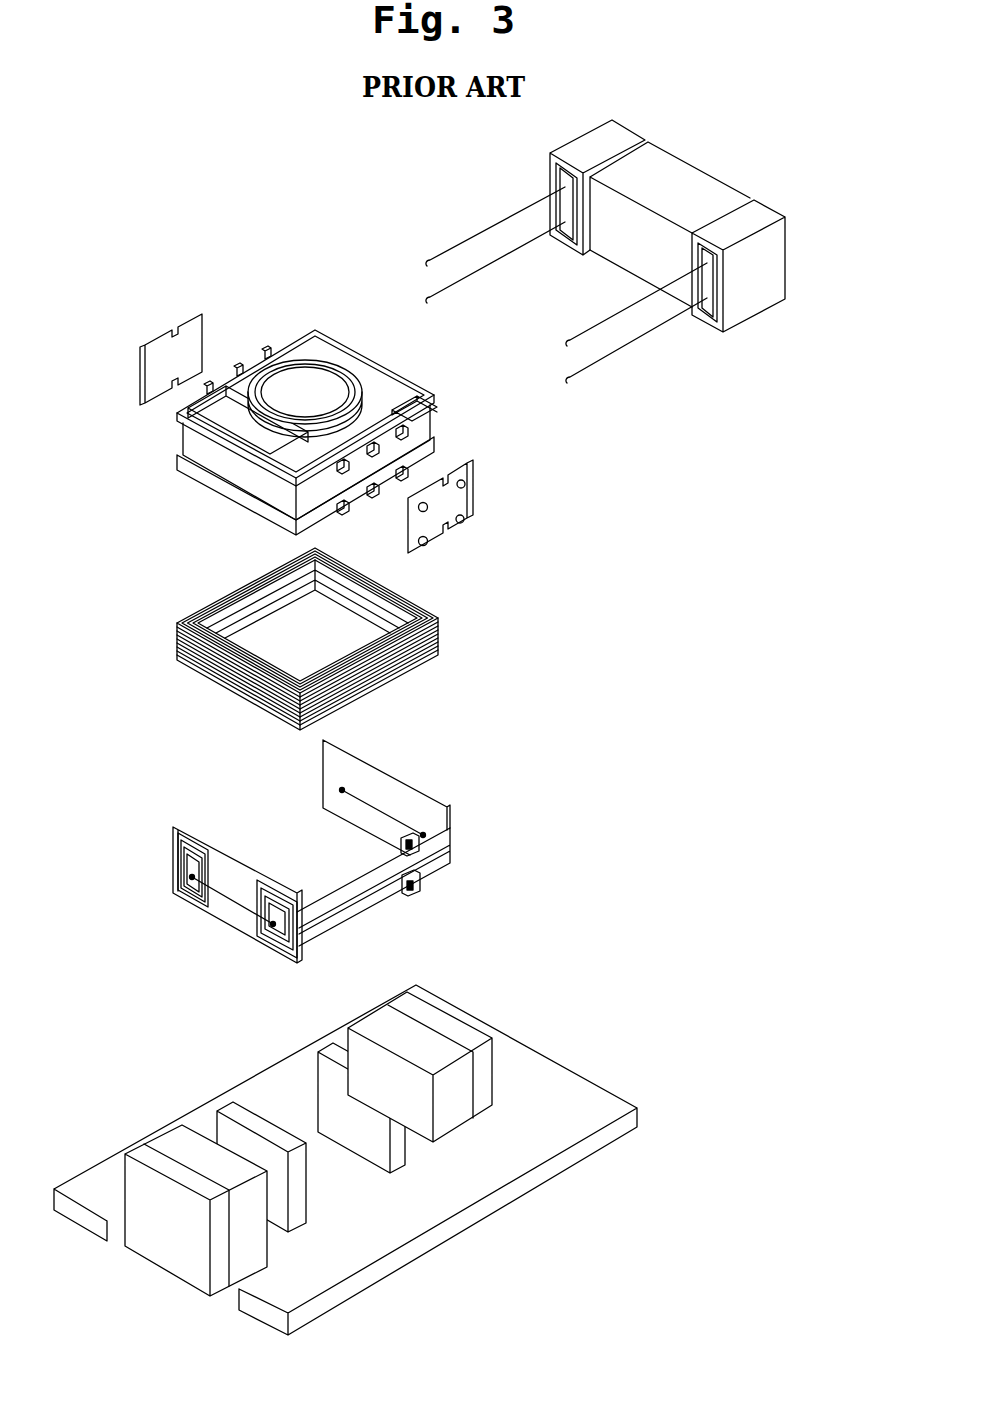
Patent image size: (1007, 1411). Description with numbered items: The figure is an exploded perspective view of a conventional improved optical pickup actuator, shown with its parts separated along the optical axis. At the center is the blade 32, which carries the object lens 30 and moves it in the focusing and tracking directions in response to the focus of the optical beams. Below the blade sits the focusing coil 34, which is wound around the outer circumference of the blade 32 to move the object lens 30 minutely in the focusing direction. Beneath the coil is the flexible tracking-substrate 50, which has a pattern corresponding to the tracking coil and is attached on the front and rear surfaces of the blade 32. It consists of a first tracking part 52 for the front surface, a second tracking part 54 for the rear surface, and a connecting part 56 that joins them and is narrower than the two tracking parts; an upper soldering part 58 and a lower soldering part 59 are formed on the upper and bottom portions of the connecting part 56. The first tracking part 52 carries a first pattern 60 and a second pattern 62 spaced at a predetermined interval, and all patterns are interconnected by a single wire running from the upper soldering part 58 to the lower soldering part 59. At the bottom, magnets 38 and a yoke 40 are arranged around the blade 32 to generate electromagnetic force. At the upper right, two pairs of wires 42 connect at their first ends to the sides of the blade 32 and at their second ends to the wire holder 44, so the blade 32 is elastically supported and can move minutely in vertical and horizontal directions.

The object lens 30 is at (306, 378).
The blade 32 is at (428, 410).
The focusing coil 34 is at (405, 660).
The magnets 38 is at (176, 1140).
The yoke 40 is at (570, 1090).
The wires 42 is at (627, 307).
The wire holder 44 is at (750, 295).
The tracking-substrate 50 is at (153, 758).
The first tracking part 52 is at (230, 917).
The second tracking part 54 is at (420, 785).
The connecting part 56 is at (340, 913).
The upper soldering part 58 is at (450, 853).
The lower soldering part 59 is at (415, 890).
The first pattern 60 is at (265, 960).
The second pattern 62 is at (178, 897).